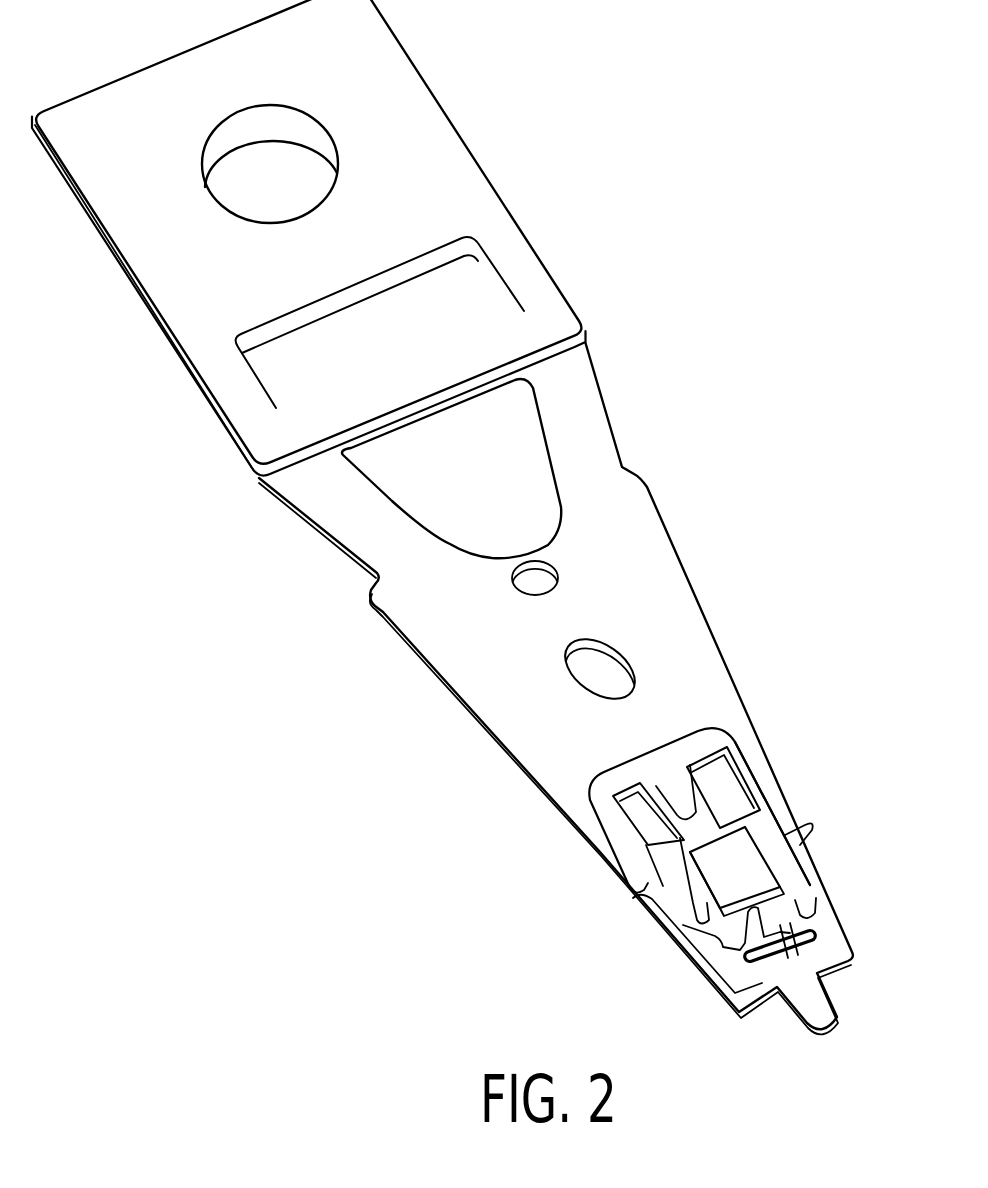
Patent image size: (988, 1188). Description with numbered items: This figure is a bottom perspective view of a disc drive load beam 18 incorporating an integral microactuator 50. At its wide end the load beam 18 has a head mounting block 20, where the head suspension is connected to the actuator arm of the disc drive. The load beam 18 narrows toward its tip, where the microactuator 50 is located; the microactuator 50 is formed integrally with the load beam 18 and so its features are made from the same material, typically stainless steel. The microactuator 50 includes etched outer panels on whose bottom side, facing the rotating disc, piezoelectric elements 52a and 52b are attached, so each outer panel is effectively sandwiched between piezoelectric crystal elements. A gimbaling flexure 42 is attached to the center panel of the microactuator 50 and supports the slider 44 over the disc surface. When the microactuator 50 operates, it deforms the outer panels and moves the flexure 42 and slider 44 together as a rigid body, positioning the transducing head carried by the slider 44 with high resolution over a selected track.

The load beam 18 is at (643, 518).
The head mounting block 20 is at (388, 47).
The gimbaling flexure 42 is at (753, 772).
The slider 44 is at (743, 860).
The microactuator 50 is at (600, 868).
The piezoelectric element 52a is at (716, 773).
The piezoelectric element 52b is at (612, 796).